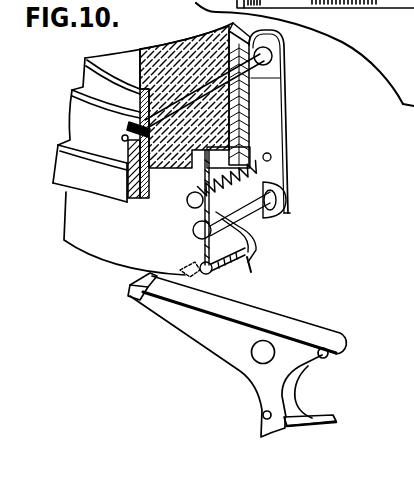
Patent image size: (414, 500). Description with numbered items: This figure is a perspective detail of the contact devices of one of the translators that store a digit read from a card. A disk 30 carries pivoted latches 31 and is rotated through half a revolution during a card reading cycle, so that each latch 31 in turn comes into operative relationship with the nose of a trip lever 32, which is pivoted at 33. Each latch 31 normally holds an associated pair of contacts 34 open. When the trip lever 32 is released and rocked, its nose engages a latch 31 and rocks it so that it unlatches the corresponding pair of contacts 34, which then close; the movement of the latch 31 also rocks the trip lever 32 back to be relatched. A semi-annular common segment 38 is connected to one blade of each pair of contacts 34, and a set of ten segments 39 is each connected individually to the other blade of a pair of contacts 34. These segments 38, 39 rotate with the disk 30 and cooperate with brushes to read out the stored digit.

The disk 30 is at (110, 245).
The latch 31 is at (197, 288).
The trip lever 32 is at (129, 290).
The pivot 33 is at (269, 348).
The pair of contacts 34 is at (271, 160).
The semi-annular common segment 38 is at (105, 178).
The segments 39 is at (172, 170).